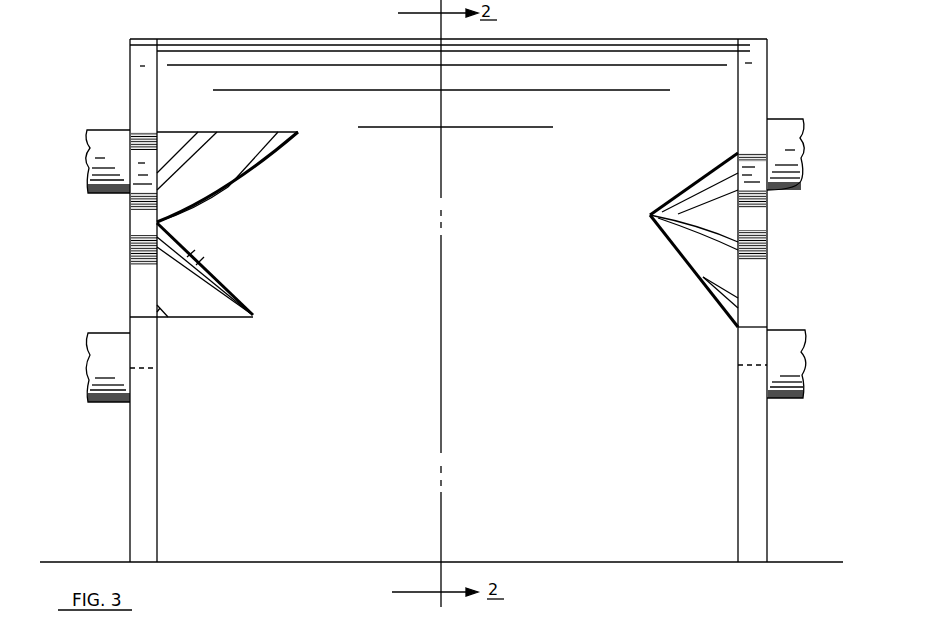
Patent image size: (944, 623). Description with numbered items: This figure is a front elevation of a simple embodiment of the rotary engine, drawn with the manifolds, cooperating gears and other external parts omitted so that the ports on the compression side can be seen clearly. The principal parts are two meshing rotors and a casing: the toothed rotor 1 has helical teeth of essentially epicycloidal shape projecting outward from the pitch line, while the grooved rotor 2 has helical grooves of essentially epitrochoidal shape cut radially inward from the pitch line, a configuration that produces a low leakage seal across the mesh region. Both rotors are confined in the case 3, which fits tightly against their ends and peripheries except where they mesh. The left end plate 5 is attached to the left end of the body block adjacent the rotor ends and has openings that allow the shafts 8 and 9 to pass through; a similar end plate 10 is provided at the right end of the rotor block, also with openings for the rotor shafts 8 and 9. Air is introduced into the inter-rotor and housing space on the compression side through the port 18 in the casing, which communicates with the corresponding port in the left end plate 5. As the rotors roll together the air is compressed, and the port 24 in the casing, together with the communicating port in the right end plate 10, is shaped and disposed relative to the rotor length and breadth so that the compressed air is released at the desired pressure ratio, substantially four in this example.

The toothed rotor 1 is at (187, 304).
The grooved rotor 2 is at (240, 150).
The case 3 is at (620, 545).
The left end plate 5 is at (137, 495).
The shaft 8 is at (110, 345).
The shaft 9 is at (112, 137).
The end plate 10 is at (757, 490).
The port 18 is at (198, 205).
The port 24 is at (683, 258).